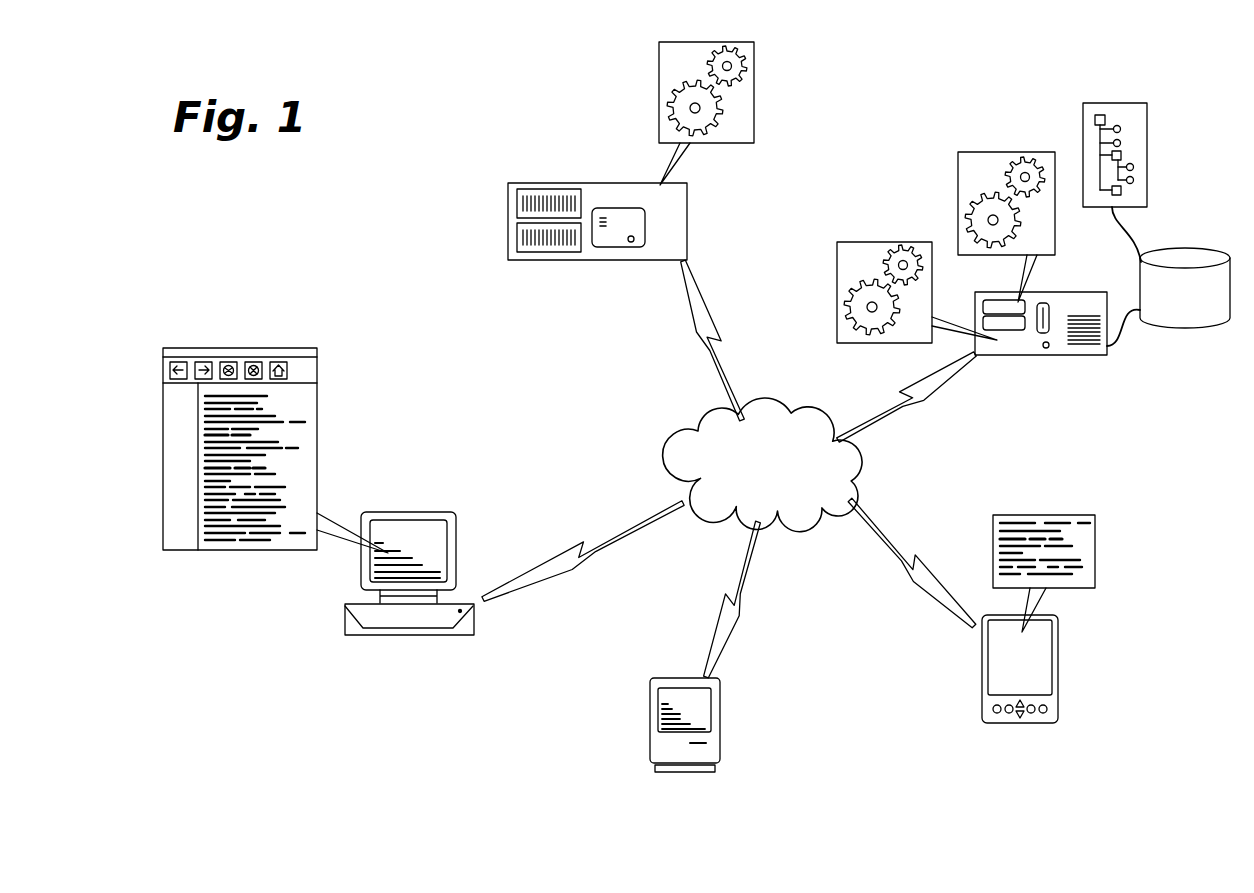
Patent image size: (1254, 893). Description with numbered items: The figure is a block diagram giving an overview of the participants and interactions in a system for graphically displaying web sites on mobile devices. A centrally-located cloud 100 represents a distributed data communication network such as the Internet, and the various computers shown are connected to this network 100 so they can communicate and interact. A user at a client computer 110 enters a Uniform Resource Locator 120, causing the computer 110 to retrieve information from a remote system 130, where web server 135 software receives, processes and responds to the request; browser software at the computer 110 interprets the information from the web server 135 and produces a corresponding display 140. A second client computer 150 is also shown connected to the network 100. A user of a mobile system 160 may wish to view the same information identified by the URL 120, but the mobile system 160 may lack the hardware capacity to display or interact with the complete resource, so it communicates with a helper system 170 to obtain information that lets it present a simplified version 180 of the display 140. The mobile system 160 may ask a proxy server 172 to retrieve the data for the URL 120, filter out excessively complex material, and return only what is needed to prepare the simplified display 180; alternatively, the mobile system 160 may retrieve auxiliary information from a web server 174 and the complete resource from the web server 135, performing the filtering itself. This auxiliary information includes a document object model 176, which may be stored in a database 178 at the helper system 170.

The cloud 100 is at (838, 496).
The computer 110 is at (345, 636).
The Uniform Resource Locator 120 is at (103, 320).
The remote system 130 is at (507, 196).
The web server 135 is at (755, 101).
The display 140 is at (163, 500).
The client computer 150 is at (715, 768).
The mobile system 160 is at (1048, 724).
The helper system 170 is at (1098, 356).
The proxy server 172 is at (837, 338).
The web server 174 is at (958, 183).
The document object model 176 is at (1147, 104).
The database 178 is at (1220, 312).
The simplified version 180 is at (1095, 568).